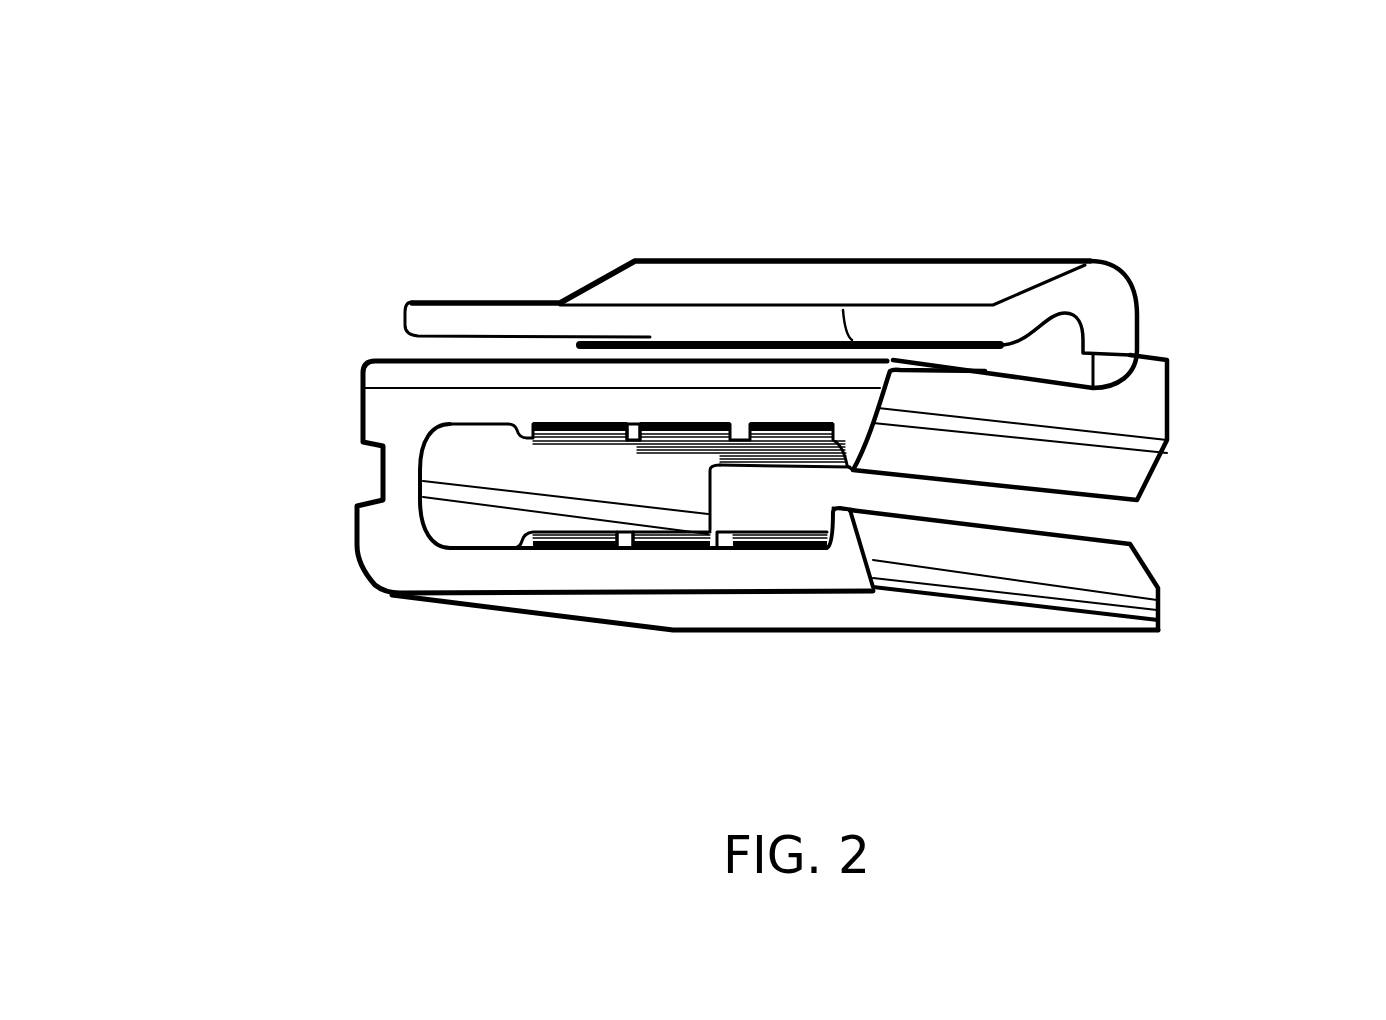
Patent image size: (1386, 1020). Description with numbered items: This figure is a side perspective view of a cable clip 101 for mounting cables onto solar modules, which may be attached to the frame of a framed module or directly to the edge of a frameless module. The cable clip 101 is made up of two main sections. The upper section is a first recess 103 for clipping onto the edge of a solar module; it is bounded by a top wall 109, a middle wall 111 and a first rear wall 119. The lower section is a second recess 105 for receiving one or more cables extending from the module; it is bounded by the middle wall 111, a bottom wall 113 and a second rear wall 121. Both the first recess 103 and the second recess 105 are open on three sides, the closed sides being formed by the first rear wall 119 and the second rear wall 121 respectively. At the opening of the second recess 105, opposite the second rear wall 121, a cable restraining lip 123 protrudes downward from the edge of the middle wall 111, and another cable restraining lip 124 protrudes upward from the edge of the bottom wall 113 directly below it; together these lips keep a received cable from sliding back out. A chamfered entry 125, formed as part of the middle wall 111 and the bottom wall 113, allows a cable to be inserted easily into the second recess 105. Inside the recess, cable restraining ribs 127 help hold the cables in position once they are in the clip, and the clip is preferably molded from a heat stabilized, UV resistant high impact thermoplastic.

The cable clip 101 is at (761, 464).
The first recess 103 is at (1042, 353).
The second recess 105 is at (1087, 523).
The top wall 109 is at (712, 282).
The middle wall 111 is at (457, 410).
The bottom wall 113 is at (762, 609).
The first rear wall 119 is at (1117, 340).
The second rear wall 121 is at (403, 473).
The cable restraining lip 123 is at (848, 457).
The cable restraining lip 124 is at (840, 527).
The chamfered entry 125 is at (1133, 473).
The cable restraining ribs 127 is at (637, 426).